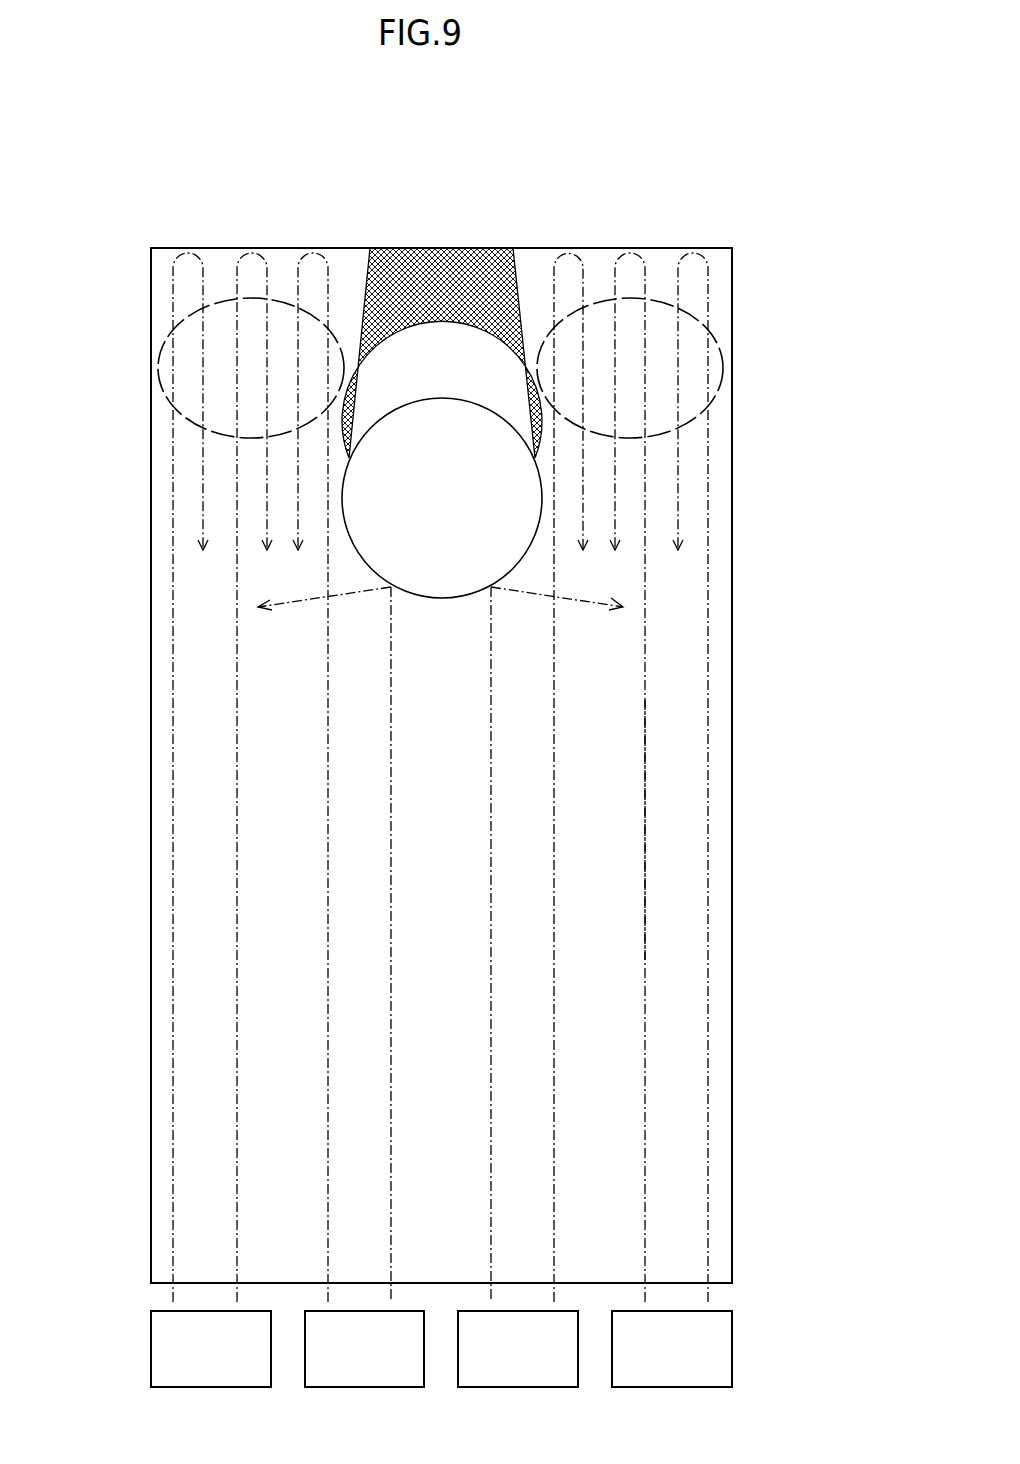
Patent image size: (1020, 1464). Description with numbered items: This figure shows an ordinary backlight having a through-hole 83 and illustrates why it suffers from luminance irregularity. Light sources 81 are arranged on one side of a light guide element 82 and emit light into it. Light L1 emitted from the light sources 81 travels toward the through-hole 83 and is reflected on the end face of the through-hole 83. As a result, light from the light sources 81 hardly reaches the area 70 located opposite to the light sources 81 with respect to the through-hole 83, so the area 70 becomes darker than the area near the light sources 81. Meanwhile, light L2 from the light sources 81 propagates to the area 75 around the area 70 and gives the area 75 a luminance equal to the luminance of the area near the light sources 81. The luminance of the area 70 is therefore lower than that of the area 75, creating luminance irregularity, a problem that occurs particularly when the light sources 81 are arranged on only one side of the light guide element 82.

The area 70 is at (444, 320).
The area 75 is at (658, 300).
The light source 81 is at (178, 1349).
The light guide element 82 is at (212, 1010).
The through-hole 83 is at (352, 557).
The light L1 is at (490, 1093).
The light L2 is at (645, 833).